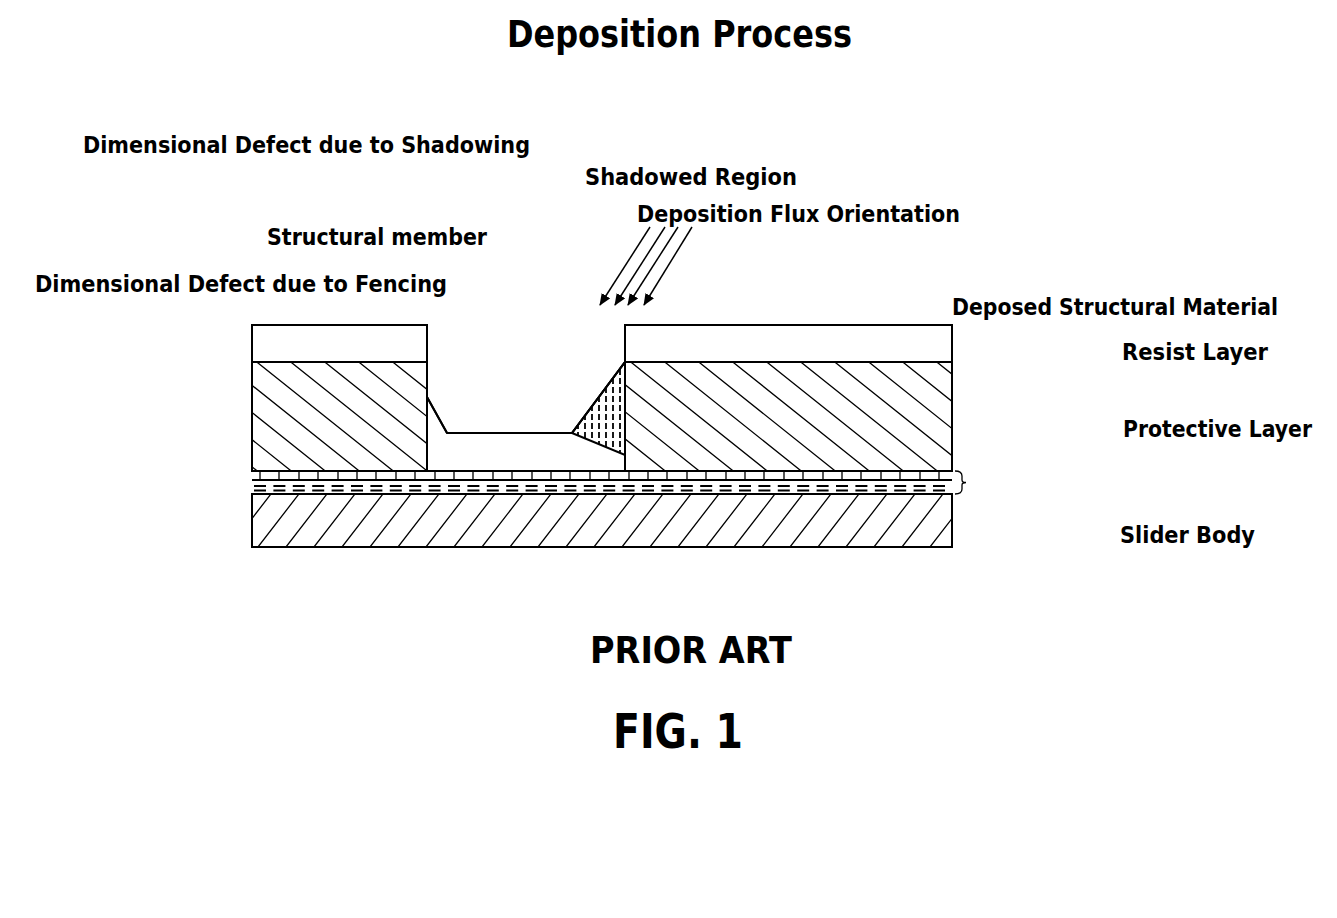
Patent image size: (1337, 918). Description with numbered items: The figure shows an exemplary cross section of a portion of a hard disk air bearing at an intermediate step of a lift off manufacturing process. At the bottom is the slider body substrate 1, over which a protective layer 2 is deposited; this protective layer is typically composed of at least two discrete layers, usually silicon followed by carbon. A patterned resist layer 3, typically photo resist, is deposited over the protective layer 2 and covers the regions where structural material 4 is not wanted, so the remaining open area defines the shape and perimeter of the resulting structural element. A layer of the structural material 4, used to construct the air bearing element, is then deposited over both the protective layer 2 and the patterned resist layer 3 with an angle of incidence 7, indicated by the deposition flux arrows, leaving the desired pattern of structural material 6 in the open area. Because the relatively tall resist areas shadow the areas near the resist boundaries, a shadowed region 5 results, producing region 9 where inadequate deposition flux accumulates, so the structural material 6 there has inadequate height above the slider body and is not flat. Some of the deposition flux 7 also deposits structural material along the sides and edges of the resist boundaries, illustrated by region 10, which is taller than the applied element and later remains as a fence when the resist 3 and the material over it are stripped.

The slider body substrate 1 is at (962, 532).
The protective layer 2 is at (968, 482).
The patterned resist layer 3 is at (963, 434).
The structural material 4 is at (903, 322).
The shadowed region 5 is at (598, 375).
The structural material 6 is at (513, 422).
The angle of incidence 7 is at (681, 265).
The region 9 is at (593, 413).
The region 10 is at (445, 402).